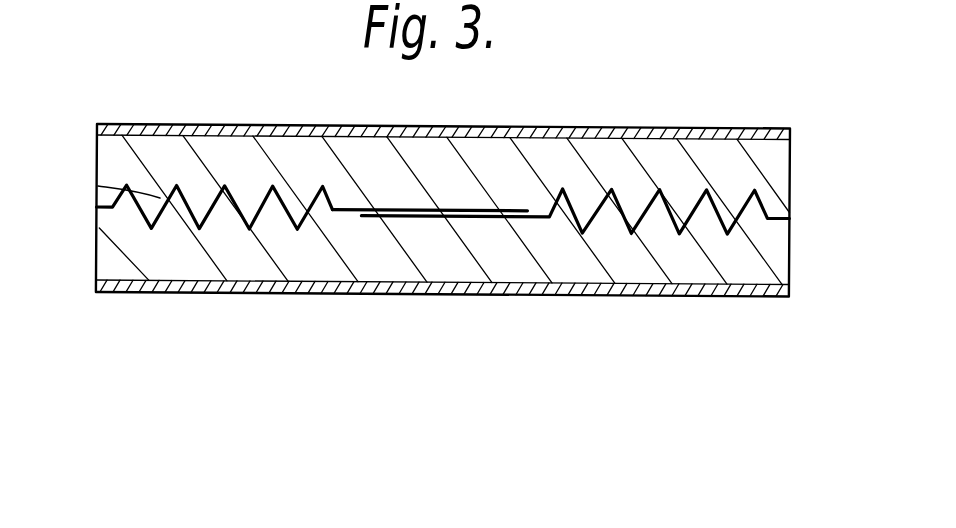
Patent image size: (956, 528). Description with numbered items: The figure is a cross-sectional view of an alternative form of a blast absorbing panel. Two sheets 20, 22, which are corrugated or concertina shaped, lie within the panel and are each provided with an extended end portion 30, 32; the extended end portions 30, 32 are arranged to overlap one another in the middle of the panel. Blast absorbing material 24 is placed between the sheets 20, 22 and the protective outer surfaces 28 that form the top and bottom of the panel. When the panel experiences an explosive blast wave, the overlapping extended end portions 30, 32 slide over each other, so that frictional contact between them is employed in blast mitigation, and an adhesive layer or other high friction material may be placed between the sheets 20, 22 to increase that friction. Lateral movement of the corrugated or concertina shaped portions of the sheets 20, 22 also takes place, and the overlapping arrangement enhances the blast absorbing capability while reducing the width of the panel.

The sheet 20 is at (763, 203).
The sheet 22 is at (98, 186).
The blast absorbing material 24 is at (640, 262).
The protective outer surfaces 28 is at (198, 125).
The extended end portion 30 is at (453, 223).
The extended end portion 32 is at (415, 206).